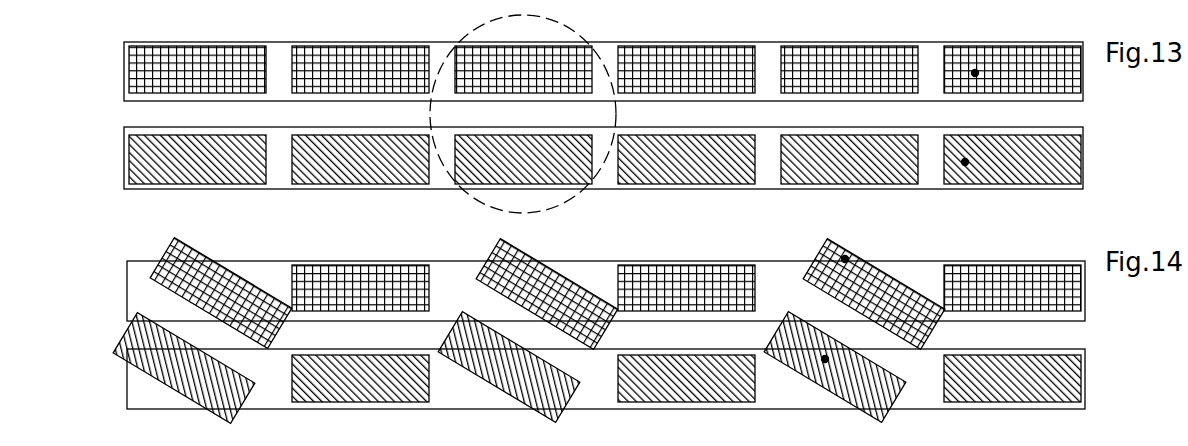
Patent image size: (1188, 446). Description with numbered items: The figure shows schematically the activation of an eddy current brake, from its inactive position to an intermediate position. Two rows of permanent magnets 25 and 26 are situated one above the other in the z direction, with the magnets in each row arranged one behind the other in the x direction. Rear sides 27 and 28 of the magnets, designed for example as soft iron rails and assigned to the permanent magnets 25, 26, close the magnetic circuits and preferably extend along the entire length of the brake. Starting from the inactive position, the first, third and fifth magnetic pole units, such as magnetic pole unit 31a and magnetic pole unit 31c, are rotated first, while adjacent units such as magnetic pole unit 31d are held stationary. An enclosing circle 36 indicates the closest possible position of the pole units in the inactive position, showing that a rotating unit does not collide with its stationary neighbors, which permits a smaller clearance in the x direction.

In FIG. 13, the permanent magnet 25 is at (975, 73).
In FIG. 14, the permanent magnet 25 is at (845, 259).
In FIG. 13, the permanent magnet 26 is at (965, 162).
In FIG. 14, the permanent magnet 26 is at (825, 359).
In FIG. 13, the rear side of magnets 27 is at (285, 62).
In FIG. 14, the rear side of magnets 27 is at (285, 281).
In FIG. 13, the rear side of magnets 28 is at (275, 170).
In FIG. 14, the rear side of magnets 28 is at (275, 389).
In FIG. 13, the magnetic pole unit 31a is at (513, 43).
In FIG. 14, the magnetic pole unit 31a is at (558, 274).
In FIG. 13, the magnetic pole unit 31c is at (371, 43).
In FIG. 14, the magnetic pole unit 31c is at (371, 264).
In FIG. 13, the magnetic pole unit 31d is at (729, 43).
In FIG. 14, the magnetic pole unit 31d is at (727, 265).
In FIG. 13, the enclosing circle 36 is at (602, 62).